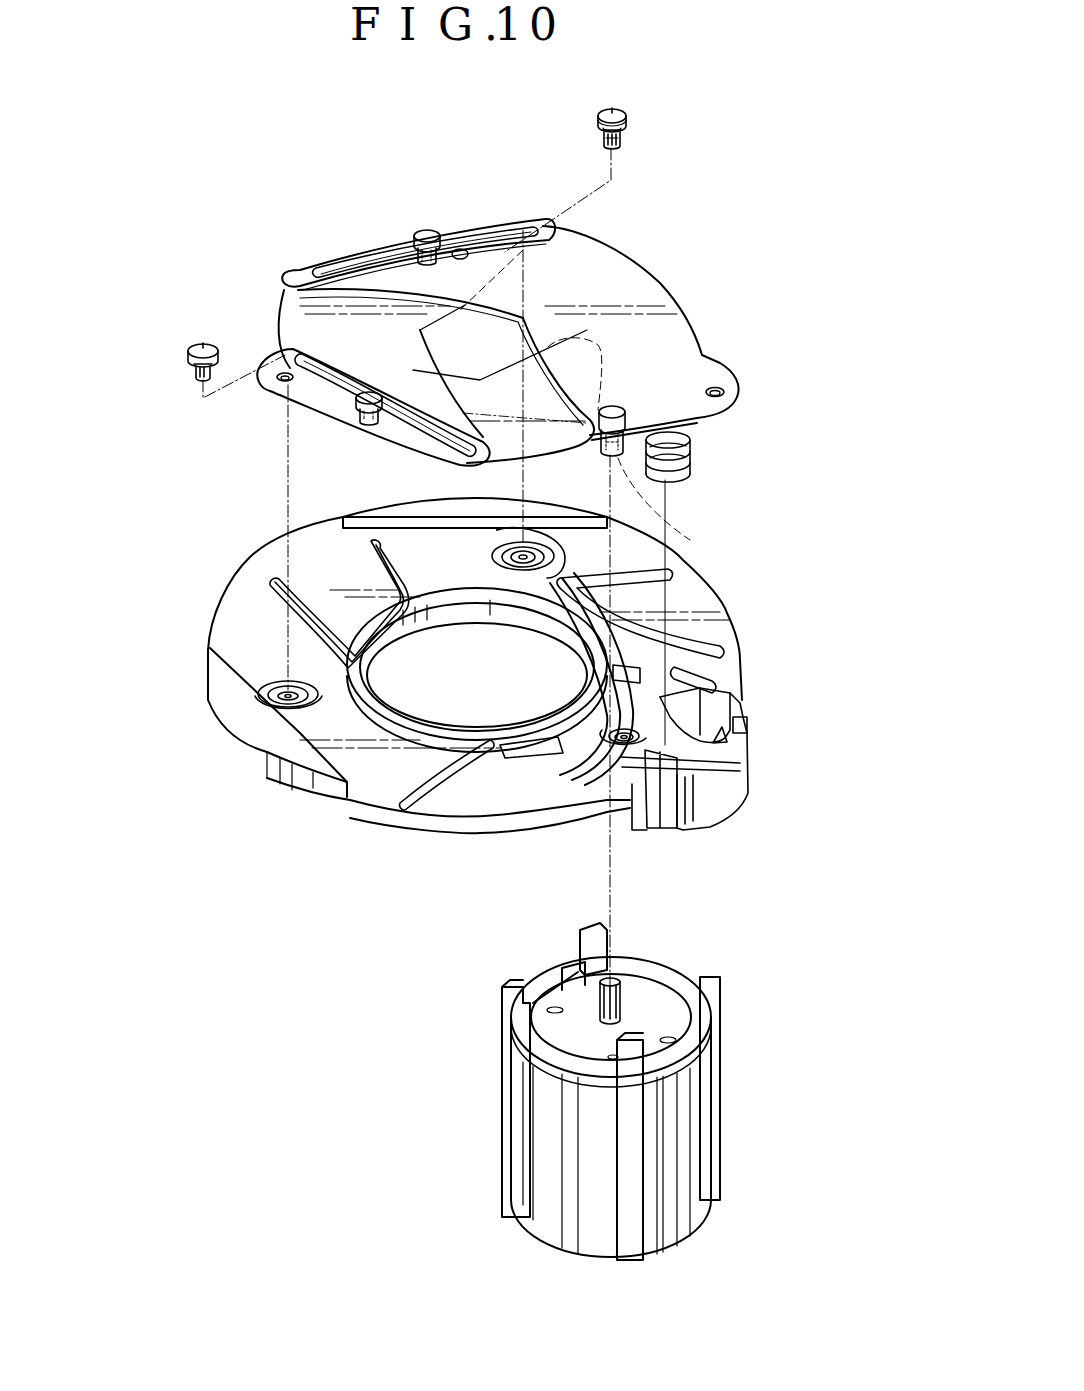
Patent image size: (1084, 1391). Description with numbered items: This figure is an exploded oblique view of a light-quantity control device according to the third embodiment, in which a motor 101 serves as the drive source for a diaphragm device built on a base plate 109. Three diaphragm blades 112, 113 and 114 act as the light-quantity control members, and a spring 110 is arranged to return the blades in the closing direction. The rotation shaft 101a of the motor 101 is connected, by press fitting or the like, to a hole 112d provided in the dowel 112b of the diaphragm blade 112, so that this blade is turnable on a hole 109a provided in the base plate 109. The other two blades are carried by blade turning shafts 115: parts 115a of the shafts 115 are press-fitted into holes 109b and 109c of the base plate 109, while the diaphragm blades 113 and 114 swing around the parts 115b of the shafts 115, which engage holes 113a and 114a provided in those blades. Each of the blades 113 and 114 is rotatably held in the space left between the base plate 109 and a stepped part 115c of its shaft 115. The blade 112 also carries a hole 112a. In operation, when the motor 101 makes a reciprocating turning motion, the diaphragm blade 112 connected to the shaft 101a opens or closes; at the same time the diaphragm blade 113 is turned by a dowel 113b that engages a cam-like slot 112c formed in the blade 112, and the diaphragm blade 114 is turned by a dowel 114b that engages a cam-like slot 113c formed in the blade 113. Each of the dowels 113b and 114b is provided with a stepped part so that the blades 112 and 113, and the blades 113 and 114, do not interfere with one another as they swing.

The motor 101 is at (697, 1150).
The rotation shaft 101a is at (620, 997).
The base plate 109 is at (743, 790).
The hole 109a is at (612, 765).
The hole 109b is at (490, 552).
The hole 109c is at (305, 717).
The spring 110 is at (690, 450).
The diaphragm blade 112 is at (607, 277).
The hole of cover plate 112a is at (718, 384).
The dowel 112b is at (615, 455).
The cam-like slot 112c is at (453, 247).
The hole 112d is at (625, 470).
The diaphragm blade 113 is at (303, 327).
The hole 113a is at (500, 222).
The dowel 113b is at (425, 232).
The cam-like slot 113c is at (325, 385).
The diaphragm blade 114 is at (552, 428).
The hole 114a is at (278, 388).
The dowel 114b is at (366, 410).
The blade turning shaft 115 is at (614, 108).
The part of shaft 115a is at (620, 145).
The part of shaft 115b is at (622, 130).
The stepped part 115c is at (596, 132).